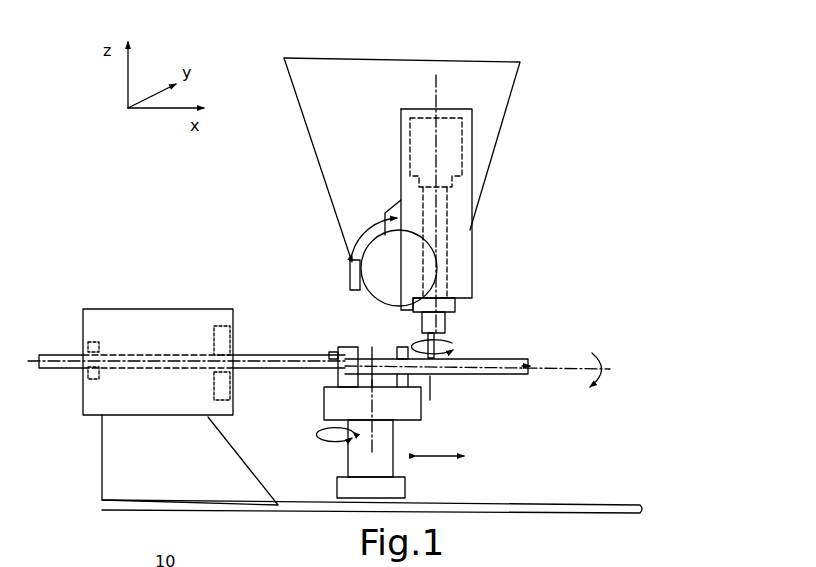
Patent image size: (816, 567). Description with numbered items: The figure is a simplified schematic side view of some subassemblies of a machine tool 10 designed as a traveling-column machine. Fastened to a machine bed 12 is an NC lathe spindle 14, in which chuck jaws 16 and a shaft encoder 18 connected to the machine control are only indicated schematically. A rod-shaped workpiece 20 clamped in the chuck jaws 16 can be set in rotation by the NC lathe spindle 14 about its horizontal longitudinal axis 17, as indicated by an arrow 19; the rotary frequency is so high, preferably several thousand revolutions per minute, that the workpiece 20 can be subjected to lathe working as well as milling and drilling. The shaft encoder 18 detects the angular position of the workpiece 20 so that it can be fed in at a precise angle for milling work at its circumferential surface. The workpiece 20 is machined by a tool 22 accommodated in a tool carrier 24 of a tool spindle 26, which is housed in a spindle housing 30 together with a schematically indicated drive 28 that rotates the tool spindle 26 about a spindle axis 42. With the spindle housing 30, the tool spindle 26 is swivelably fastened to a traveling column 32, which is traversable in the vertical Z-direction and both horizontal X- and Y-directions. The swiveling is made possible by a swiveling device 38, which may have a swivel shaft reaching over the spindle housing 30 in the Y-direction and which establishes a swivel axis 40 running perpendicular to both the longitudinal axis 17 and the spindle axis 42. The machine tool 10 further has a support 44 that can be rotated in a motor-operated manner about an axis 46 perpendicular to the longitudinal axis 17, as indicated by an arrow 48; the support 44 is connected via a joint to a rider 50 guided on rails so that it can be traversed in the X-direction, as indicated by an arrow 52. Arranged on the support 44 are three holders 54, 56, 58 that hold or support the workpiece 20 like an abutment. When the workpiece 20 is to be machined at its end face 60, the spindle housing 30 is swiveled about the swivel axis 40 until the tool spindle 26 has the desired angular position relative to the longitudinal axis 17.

The machine tool 10 is at (634, 128).
The machine bed 12 is at (612, 511).
The NC lathe spindle 14 is at (155, 323).
The chuck jaws 16 is at (220, 345).
The longitudinal axis 17 is at (570, 372).
The shaft encoder 18 is at (88, 343).
The arrow 19 is at (602, 378).
The rod-shaped workpiece 20 is at (285, 365).
The tool 22 is at (452, 346).
The tool carrier 24 is at (440, 318).
The tool spindle 26 is at (440, 217).
The drive 28 is at (447, 156).
The spindle housing 30 is at (457, 252).
The traveling column 32 is at (498, 88).
The swiveling device 38 is at (350, 262).
The swivel axis 40 is at (396, 268).
The spindle axis 42 is at (433, 96).
The support 44 is at (410, 410).
The axis 46 is at (370, 404).
The arrow 48 is at (378, 452).
The rider 50 is at (354, 488).
The arrow 52 is at (442, 460).
The holder 54 is at (330, 352).
The holder 56 is at (347, 347).
The holder 58 is at (400, 347).
The end face 60 is at (530, 362).